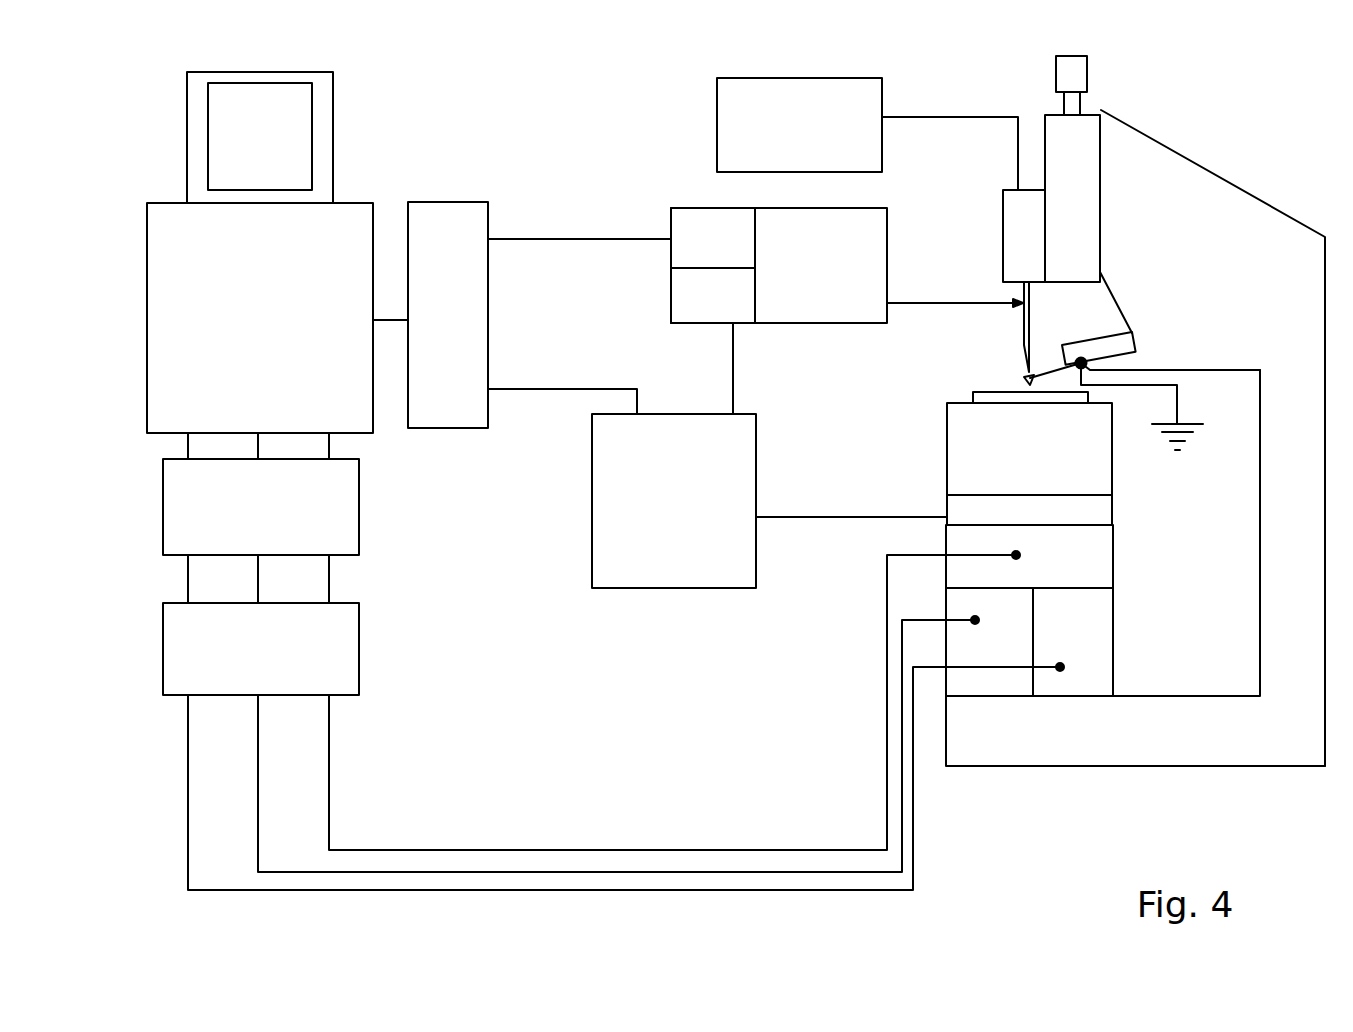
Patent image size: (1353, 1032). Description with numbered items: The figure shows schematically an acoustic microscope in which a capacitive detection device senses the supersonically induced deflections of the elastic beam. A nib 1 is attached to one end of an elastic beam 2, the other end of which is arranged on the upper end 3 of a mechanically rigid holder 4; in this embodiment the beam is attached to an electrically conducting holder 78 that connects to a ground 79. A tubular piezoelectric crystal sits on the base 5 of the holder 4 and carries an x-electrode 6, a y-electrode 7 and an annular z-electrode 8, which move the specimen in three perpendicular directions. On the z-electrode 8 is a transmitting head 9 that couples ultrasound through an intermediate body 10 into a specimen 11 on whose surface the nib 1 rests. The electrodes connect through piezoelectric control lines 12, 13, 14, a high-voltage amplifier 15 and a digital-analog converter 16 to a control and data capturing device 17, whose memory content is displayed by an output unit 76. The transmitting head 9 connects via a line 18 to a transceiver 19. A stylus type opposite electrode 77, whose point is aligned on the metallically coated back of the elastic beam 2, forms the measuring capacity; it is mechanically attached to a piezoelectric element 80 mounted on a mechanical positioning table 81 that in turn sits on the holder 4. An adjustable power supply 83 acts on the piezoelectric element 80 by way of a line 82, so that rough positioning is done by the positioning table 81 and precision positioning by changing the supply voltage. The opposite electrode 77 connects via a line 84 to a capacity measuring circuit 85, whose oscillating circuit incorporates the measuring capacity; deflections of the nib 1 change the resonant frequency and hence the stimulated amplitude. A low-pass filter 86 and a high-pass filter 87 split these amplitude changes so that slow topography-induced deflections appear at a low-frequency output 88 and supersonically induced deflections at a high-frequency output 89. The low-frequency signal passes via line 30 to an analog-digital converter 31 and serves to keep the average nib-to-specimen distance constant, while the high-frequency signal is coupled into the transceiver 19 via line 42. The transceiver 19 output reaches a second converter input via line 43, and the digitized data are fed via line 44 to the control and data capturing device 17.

The nib 1 is at (1024, 381).
The elastic beam 2 is at (1043, 370).
The upper end 3 is at (1200, 165).
The holder 4 is at (1283, 529).
The base 5 is at (1135, 766).
The x-electrode 6 is at (1064, 647).
The y-electrode 7 is at (991, 647).
The z-electrode 8 is at (1055, 580).
The transmitting head 9 is at (1088, 510).
The intermediate body 10 is at (1013, 470).
The specimen 11 is at (1000, 397).
The piezoelectric control line 12 is at (383, 890).
The piezoelectric control line 13 is at (463, 872).
The piezoelectric control line 14 is at (552, 850).
The high-voltage amplifier 15 is at (242, 670).
The digital-analog converter 16 is at (242, 525).
The control and data capturing device 17 is at (241, 342).
The line 18 is at (852, 517).
The transceiver 19 is at (651, 507).
The line 30 is at (530, 239).
The analog-digital converter 31 is at (425, 342).
The line 42 is at (733, 385).
The line 43 is at (570, 389).
The line 44 is at (387, 320).
The output unit 76 is at (241, 147).
The opposite electrode 77 is at (1023, 331).
The electrically conducting holder 78 is at (1137, 347).
The ground 79 is at (1182, 417).
The piezoelectric element 80 is at (1025, 240).
The mechanical positioning table 81 is at (1068, 177).
The line 82 is at (948, 117).
The adjustable power supply 83 is at (781, 135).
The line 84 is at (960, 303).
The capacity measuring circuit 85 is at (800, 290).
The low-pass filter 86 is at (693, 260).
The high-pass filter 87 is at (693, 315).
The low-frequency output 88 is at (667, 235).
The high-frequency output 89 is at (733, 330).